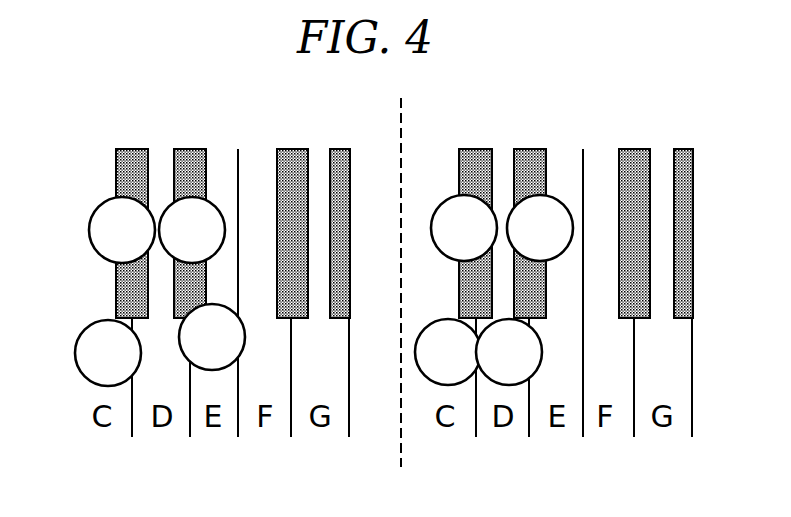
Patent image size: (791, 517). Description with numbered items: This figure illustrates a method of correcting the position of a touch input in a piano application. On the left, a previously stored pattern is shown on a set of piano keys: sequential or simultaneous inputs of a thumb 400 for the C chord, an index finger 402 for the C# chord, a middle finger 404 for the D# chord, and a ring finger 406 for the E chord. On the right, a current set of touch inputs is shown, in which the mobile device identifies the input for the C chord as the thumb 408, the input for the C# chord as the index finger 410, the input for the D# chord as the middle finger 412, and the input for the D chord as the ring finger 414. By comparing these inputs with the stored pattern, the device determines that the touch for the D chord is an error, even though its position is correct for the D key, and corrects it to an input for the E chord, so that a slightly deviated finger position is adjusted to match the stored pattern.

The thumb 400 is at (87, 333).
The index finger 402 is at (103, 210).
The middle finger 404 is at (219, 199).
The ring finger 406 is at (220, 362).
The thumb 408 is at (433, 368).
The index finger 410 is at (447, 213).
The middle finger 412 is at (552, 205).
The ring finger 414 is at (530, 358).